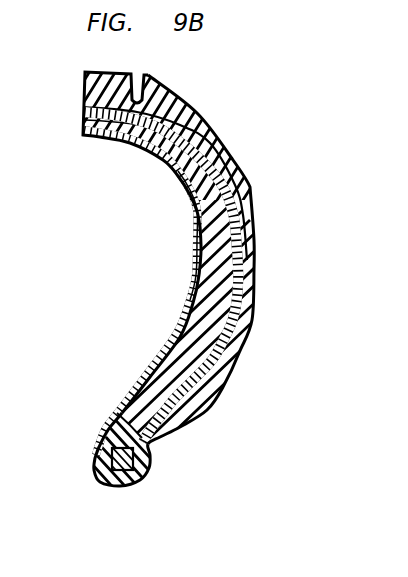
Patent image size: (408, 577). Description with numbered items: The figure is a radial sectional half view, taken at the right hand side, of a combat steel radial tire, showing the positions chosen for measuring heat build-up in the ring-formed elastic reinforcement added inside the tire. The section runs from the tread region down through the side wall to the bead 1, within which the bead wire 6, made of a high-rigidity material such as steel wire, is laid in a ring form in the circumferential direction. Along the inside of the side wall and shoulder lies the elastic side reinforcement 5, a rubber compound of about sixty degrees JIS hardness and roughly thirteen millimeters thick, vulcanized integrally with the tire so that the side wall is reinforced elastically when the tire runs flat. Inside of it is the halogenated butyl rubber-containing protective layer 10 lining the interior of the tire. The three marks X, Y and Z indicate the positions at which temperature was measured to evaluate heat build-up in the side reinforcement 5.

The bead 1 is at (102, 469).
The side reinforcement 5 is at (243, 293).
The bead wire 6 is at (140, 482).
The protective layer 10 is at (170, 350).
The temperature measurement position X is at (197, 188).
The temperature measurement position Y is at (210, 228).
The temperature measurement position Z is at (210, 290).